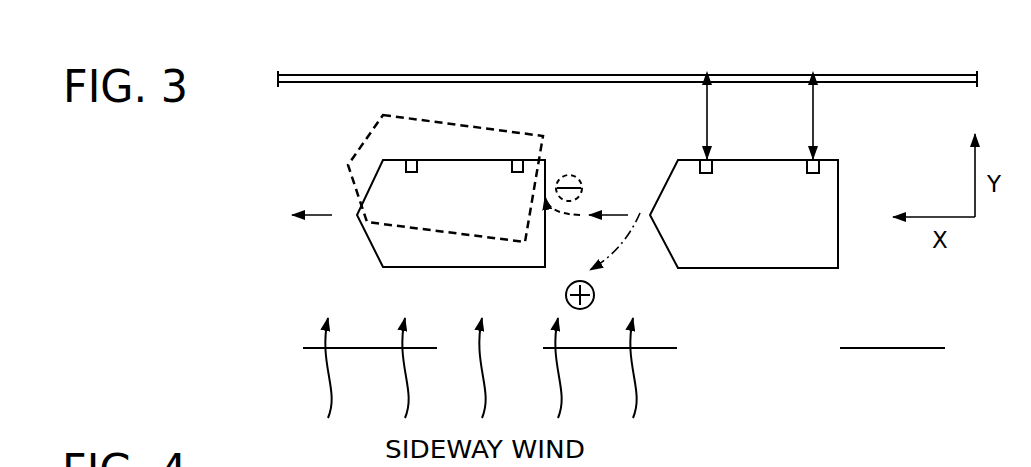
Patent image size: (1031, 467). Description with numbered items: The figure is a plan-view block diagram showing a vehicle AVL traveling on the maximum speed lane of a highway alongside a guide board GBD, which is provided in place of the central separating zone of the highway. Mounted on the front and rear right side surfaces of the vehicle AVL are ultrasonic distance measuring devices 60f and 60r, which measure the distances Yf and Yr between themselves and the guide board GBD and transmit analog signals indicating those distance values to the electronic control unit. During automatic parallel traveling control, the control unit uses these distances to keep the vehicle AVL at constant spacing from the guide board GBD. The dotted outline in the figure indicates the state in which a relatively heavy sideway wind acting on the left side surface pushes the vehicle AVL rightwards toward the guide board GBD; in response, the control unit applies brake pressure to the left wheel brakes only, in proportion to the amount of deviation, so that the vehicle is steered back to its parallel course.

The ultrasonic distance measuring device 60f is at (702, 160).
The ultrasonic distance measuring device 60r is at (820, 160).
The guide board GBD is at (876, 74).
The vehicle AVL is at (755, 269).
The distance Yf is at (726, 121).
The distance Yr is at (833, 121).